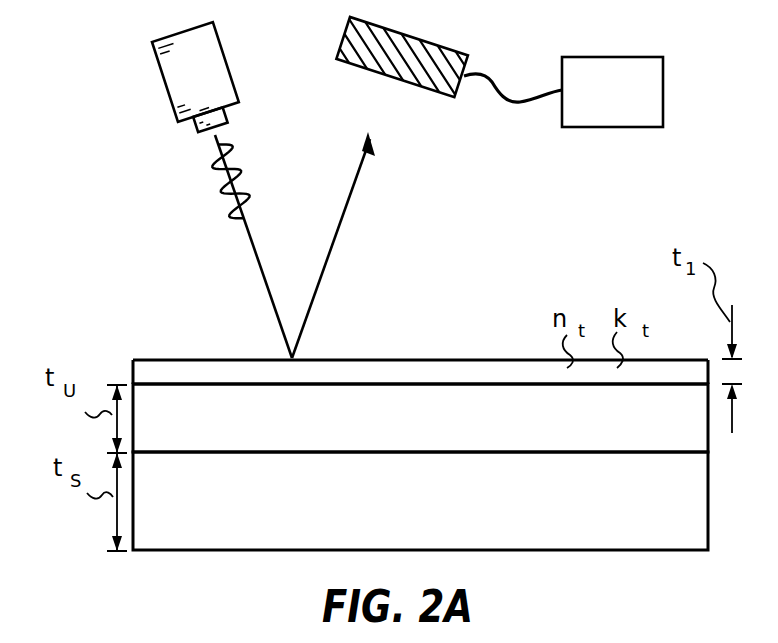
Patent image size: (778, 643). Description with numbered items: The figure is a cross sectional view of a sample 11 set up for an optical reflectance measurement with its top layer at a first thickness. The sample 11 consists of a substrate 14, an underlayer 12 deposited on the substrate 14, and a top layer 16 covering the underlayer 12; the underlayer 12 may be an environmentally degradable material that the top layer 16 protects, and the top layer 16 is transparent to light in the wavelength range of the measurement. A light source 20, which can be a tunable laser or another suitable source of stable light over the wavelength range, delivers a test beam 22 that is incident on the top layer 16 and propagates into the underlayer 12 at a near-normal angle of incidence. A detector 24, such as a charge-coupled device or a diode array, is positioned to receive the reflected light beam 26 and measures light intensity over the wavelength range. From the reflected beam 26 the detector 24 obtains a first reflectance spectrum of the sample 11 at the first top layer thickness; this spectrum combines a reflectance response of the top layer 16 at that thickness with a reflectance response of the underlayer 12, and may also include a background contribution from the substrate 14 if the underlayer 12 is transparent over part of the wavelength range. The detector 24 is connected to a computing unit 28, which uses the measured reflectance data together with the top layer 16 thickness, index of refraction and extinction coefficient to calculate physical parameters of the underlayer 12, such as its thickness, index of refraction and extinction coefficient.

The sample 11 is at (138, 308).
The underlayer 12 is at (662, 430).
The substrate 14 is at (662, 525).
The top layer 16 is at (495, 358).
The light source 20 is at (163, 82).
The test beam 22 is at (257, 265).
The detector 24 is at (438, 44).
The reflected light beam 26 is at (343, 220).
The computing unit 28 is at (623, 127).